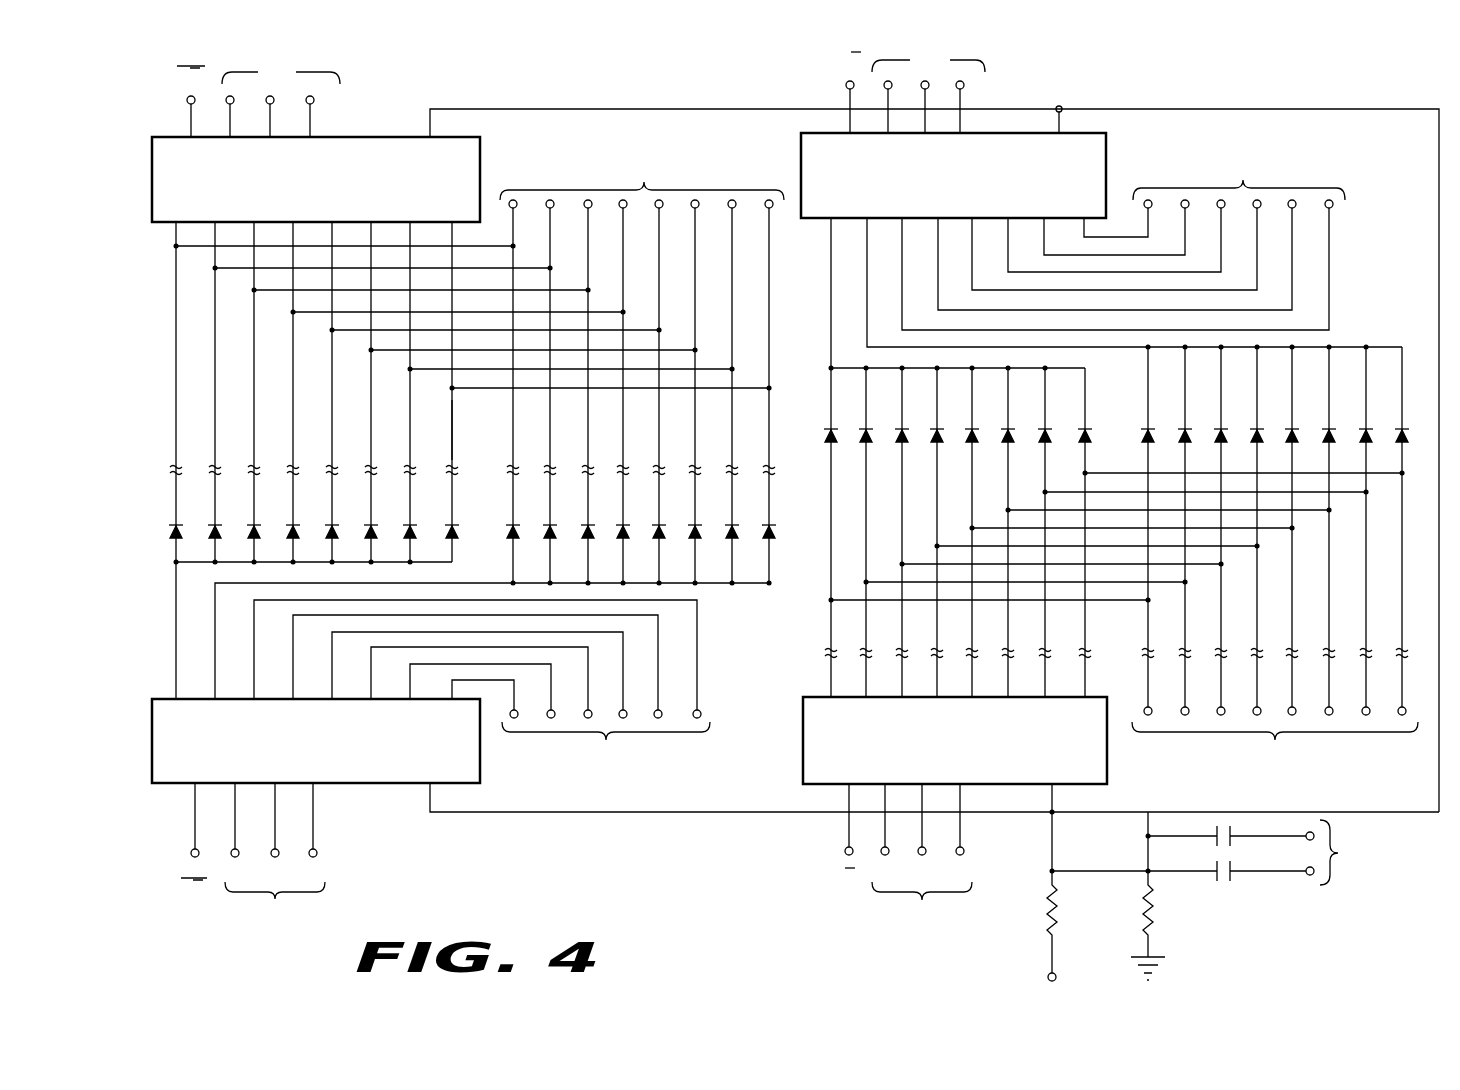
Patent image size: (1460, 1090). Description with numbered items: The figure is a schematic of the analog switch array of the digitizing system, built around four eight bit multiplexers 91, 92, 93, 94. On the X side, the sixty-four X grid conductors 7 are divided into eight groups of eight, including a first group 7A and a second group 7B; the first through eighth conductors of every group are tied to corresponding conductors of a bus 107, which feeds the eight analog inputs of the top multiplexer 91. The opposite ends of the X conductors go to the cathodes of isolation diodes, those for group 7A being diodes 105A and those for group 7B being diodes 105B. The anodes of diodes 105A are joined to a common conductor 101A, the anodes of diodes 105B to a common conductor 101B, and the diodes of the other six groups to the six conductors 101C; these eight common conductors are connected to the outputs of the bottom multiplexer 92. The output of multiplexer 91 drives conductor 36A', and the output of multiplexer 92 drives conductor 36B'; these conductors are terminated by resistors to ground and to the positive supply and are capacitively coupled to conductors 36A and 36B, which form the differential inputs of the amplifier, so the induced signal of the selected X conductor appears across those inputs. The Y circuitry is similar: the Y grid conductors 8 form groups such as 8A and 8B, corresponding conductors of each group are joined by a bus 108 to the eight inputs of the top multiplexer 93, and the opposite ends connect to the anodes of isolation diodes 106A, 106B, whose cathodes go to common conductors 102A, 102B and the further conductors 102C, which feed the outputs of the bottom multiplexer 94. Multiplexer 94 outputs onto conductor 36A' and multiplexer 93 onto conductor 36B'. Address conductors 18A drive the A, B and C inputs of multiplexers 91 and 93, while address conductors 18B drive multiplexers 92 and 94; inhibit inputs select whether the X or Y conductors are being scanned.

The X grid conductors 7 is at (160, 545).
The first group of X conductors 7A is at (461, 436).
The second group of X conductors 7B is at (507, 447).
The Y grid conductors 8 is at (823, 552).
The first group of Y conductors 8A is at (826, 568).
The second group of Y conductors 8B is at (1408, 474).
The address conductors A, B, C 18A is at (597, 491).
The address conductors of address bus 18B is at (605, 485).
The conductor 36A is at (1266, 885).
The conductor 36B is at (1162, 901).
The conductor 36A' is at (934, 445).
The conductor 36B' is at (934, 816).
The top multiplexer of X scanning circuitry 91 is at (465, 137).
The bottom multiplexer of X scanning circuitry 92 is at (168, 789).
The top multiplexer of Y scanning circuitry 93 is at (818, 786).
The bottom multiplexer of Y scanning circuitry 94 is at (1094, 135).
The conductor 101A is at (215, 563).
The conductor 101B is at (470, 582).
The conductors 101C is at (704, 706).
The common conductor 102A is at (1048, 368).
The common conductor 102B is at (1388, 328).
The common conductors 102C is at (1340, 212).
The isolation diodes 105A is at (163, 535).
The isolation diodes 105B is at (803, 510).
The isolation diodes 106A is at (822, 428).
The isolation diodes 106B is at (1138, 428).
The bus 107 is at (777, 216).
The bus 108 is at (1412, 702).